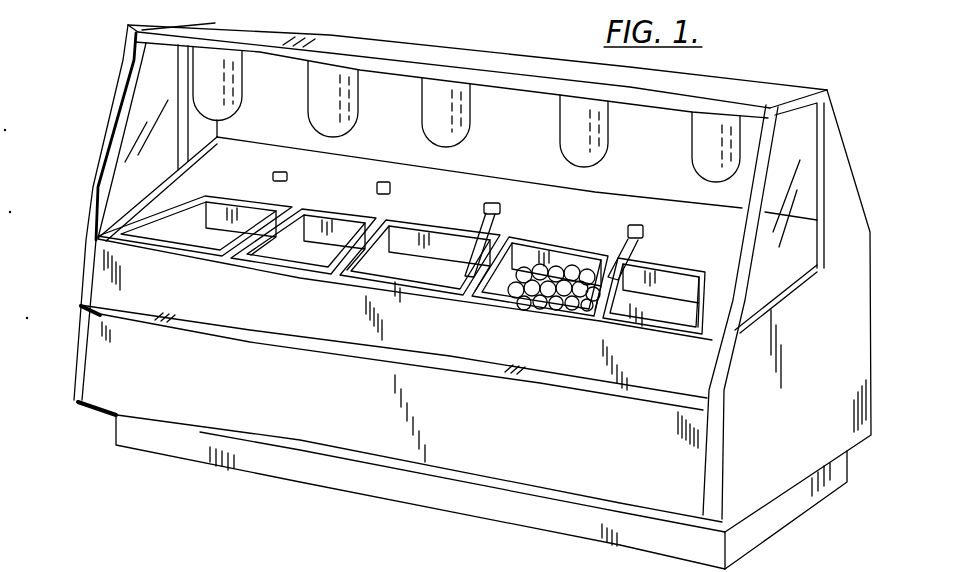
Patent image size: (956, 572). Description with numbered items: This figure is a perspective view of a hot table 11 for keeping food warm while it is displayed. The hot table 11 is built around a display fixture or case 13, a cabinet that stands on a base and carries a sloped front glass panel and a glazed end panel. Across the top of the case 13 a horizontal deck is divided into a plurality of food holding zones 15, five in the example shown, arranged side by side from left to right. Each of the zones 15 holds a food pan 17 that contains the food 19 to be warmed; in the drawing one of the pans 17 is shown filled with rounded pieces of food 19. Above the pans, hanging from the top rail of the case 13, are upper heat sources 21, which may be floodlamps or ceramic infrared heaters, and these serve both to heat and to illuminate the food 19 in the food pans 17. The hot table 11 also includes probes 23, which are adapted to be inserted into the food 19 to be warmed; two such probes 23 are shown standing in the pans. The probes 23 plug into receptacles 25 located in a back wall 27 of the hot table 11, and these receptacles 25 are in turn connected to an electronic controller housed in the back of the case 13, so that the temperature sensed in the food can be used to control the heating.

The hot table 11 is at (81, 431).
The display fixture or case 13 is at (843, 439).
The food holding zones 15 is at (159, 218).
The food pan 17 is at (278, 221).
The food 19 is at (563, 302).
The upper heat sources 21 is at (312, 108).
The probes 23 is at (620, 236).
The receptacles 25 is at (383, 181).
The back wall 27 is at (503, 190).